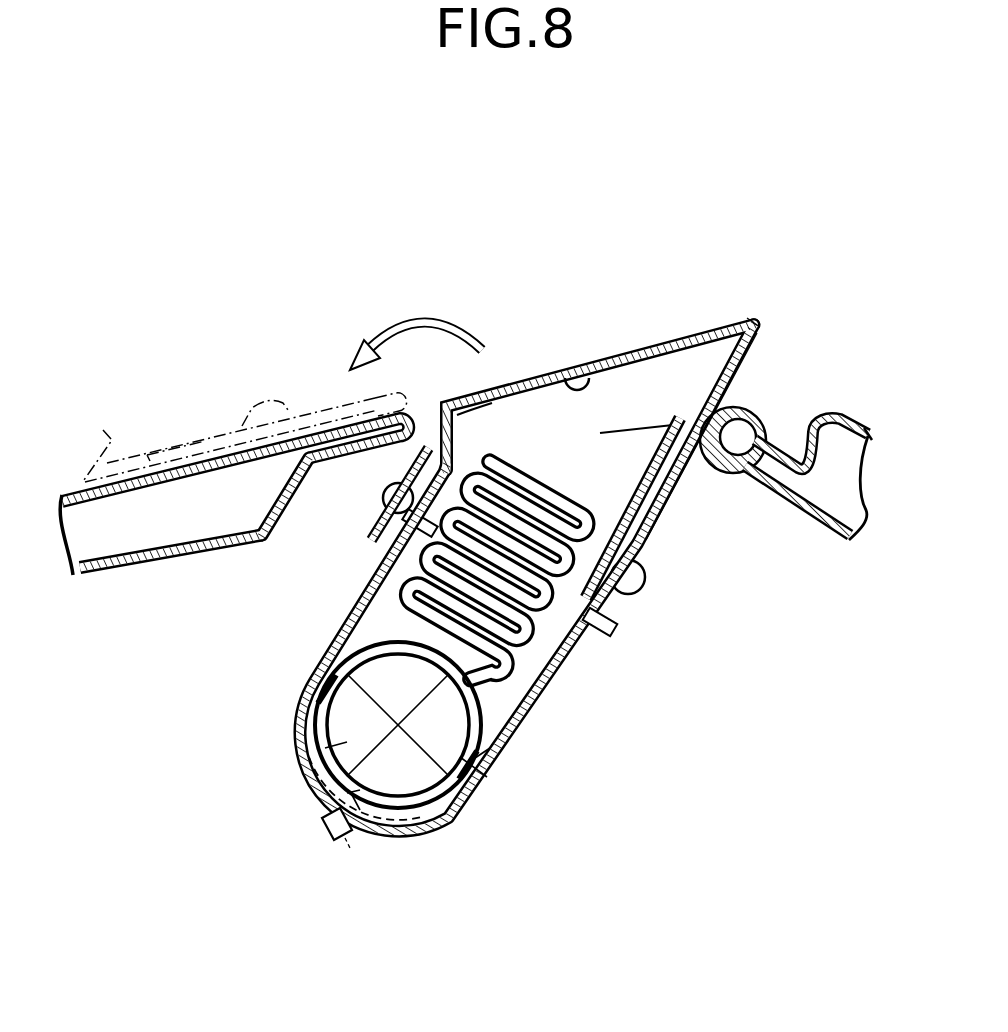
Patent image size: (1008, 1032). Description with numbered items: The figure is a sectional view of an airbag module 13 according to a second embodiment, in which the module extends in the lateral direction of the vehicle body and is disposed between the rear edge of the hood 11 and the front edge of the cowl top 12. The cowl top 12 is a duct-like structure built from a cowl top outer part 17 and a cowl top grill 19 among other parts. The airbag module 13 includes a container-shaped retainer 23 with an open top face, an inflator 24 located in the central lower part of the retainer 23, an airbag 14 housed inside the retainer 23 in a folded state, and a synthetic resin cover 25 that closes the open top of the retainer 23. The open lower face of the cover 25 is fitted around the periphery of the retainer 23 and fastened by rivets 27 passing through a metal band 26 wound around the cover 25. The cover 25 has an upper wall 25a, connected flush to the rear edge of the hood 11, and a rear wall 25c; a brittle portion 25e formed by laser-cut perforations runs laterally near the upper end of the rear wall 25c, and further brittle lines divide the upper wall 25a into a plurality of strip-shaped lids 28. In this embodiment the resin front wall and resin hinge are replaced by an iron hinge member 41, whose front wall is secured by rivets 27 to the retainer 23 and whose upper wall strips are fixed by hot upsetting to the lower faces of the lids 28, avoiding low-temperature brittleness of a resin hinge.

The hood 11 is at (194, 462).
The cowl top 12 is at (796, 390).
The airbag module 13 is at (493, 544).
The airbag 14 is at (545, 497).
The cowl top outer part 17 is at (822, 533).
The cowl top grill 19 is at (862, 432).
The retainer 23 is at (558, 663).
The inflator 24 is at (308, 767).
The cover 25 is at (533, 530).
The upper wall 25a is at (553, 376).
The rear wall 25c is at (680, 486).
The brittle portion 25e is at (712, 368).
The metal band 26 is at (656, 541).
The rivets 27 is at (383, 497).
The lids 28 is at (714, 319).
The hinge member 41 is at (462, 421).